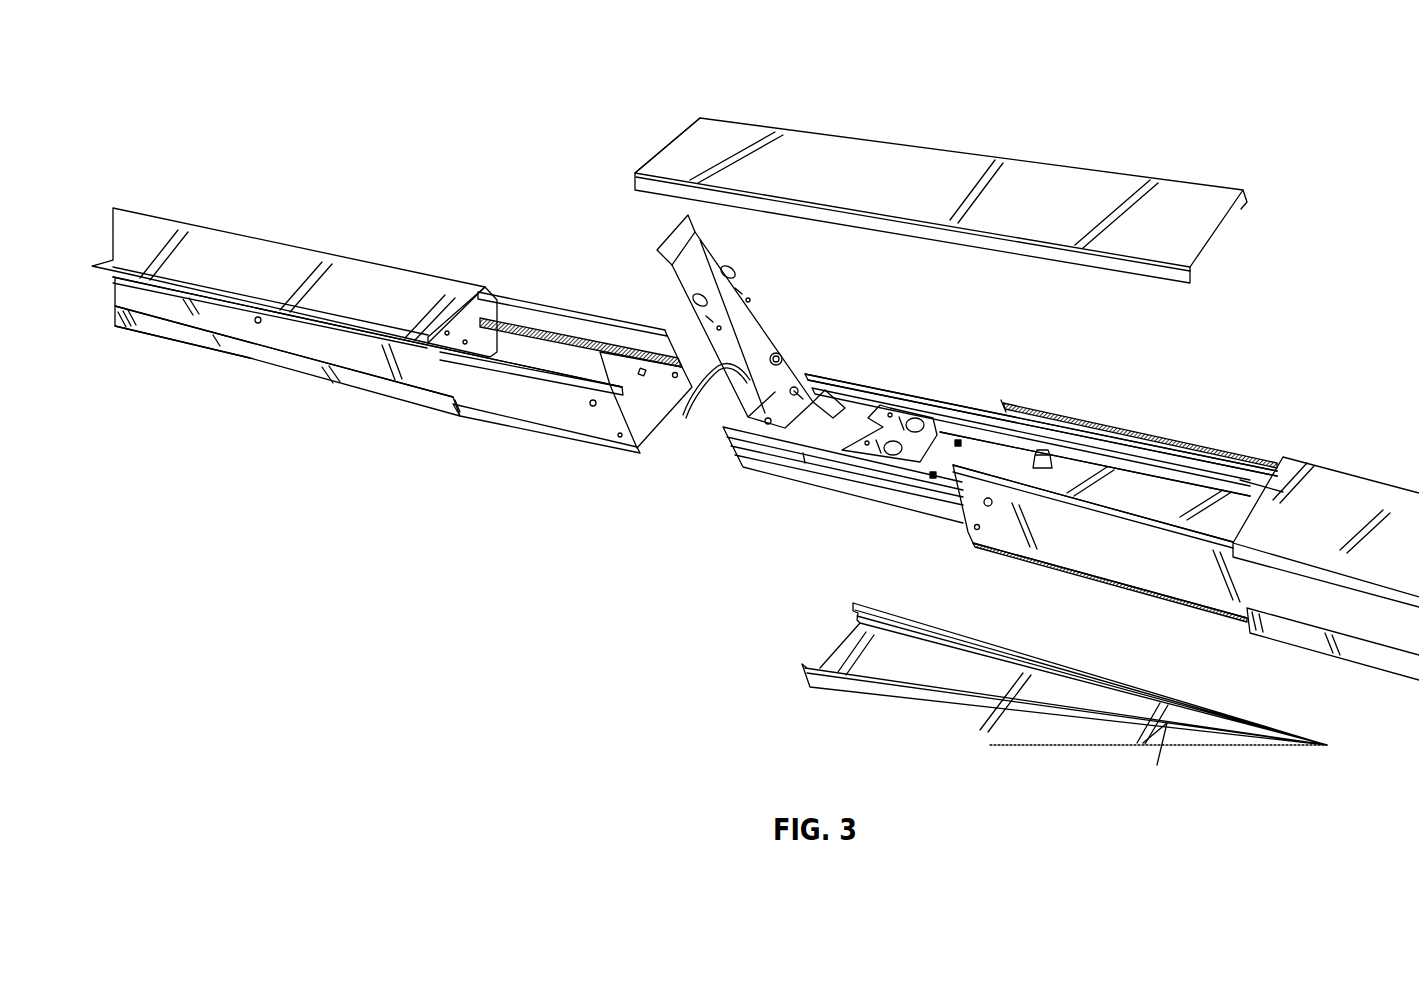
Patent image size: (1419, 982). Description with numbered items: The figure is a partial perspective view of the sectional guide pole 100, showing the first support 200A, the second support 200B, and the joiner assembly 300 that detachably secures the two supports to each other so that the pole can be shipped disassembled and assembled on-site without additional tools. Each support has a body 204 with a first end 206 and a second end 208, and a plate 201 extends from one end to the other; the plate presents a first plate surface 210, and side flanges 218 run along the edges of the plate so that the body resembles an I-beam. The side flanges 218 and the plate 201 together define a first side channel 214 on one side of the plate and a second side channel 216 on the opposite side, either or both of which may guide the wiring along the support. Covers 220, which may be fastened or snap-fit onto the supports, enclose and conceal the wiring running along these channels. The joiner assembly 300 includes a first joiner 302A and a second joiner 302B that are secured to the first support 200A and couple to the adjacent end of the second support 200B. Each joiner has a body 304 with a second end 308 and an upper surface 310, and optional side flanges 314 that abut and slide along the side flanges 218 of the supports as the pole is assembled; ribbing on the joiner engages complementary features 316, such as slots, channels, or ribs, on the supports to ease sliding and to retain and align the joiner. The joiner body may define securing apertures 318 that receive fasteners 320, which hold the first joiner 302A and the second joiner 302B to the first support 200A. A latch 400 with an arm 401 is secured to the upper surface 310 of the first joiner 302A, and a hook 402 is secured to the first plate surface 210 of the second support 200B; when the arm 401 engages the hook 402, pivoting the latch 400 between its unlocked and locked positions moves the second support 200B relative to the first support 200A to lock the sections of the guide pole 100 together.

The sectional guide pole 100 is at (398, 86).
The first support 200A is at (1235, 448).
The second support 200B is at (330, 353).
The plate 201 is at (548, 352).
The body 204 is at (412, 377).
The first end 206 is at (632, 420).
The second end 208 is at (948, 527).
The first plate surface 210 is at (530, 355).
The first side channel 214 is at (527, 317).
The second side channel 216 is at (652, 418).
The side flanges 218 is at (524, 320).
The cover 220 is at (252, 247).
The joiner assembly 300 is at (948, 320).
The first joiner 302A is at (1250, 470).
The second joiner 302B is at (765, 467).
The body 304 is at (963, 417).
The second end 308 is at (732, 462).
The upper surface 310 is at (1133, 488).
The side flanges 314 is at (863, 395).
The complementary features 316 is at (538, 358).
The securing apertures 318 is at (940, 407).
The fasteners 320 is at (1045, 450).
The latch 400 is at (728, 318).
The arm 401 is at (718, 373).
The hook 402 is at (492, 337).